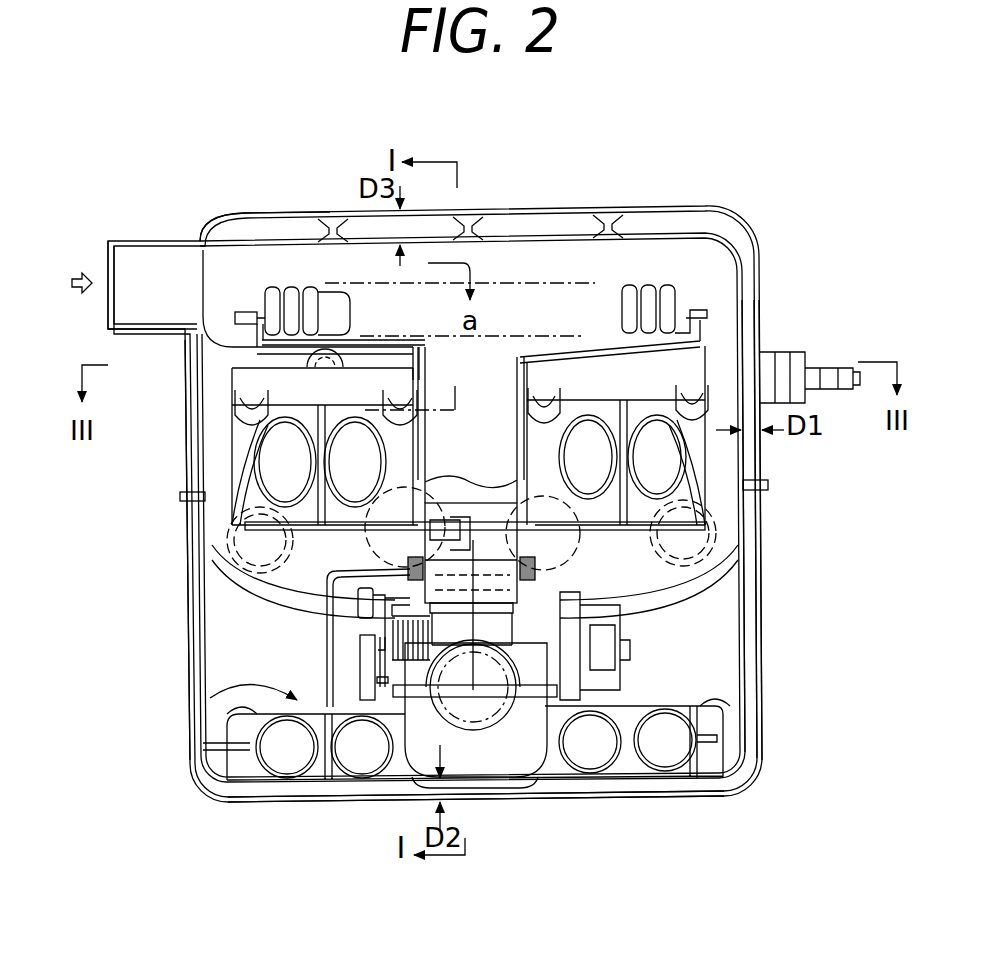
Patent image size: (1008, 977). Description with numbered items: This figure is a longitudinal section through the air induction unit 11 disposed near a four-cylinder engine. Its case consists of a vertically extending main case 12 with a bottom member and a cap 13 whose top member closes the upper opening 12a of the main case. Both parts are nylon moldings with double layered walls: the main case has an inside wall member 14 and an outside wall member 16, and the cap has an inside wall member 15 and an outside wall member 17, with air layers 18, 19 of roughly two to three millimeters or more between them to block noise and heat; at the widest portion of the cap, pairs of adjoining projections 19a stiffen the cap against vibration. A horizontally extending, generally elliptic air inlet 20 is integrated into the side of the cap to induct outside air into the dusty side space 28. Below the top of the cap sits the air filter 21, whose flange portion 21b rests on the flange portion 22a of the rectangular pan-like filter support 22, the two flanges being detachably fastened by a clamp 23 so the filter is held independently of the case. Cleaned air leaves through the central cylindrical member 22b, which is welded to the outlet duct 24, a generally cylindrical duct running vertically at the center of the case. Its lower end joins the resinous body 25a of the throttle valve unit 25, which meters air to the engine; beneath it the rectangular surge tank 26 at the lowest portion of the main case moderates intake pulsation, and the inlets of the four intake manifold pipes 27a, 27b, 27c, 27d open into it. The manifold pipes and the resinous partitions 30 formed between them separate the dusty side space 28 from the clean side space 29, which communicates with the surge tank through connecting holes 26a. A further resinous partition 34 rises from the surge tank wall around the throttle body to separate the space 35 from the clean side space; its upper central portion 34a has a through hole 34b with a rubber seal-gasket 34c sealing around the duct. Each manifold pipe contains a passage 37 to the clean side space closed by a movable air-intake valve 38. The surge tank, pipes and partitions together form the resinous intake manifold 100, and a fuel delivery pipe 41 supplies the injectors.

The air induction unit 11 is at (178, 467).
The main case 12 is at (769, 530).
The upper opening 12a is at (767, 488).
The cap 13 is at (764, 256).
The inside wall member 14 is at (752, 660).
The inside wall member 15 is at (758, 263).
The outside wall member 16 is at (748, 640).
The outside wall member 17 is at (759, 281).
The air layer 18 is at (703, 783).
The air layer 19 is at (697, 220).
The projections 19a is at (608, 220).
The air inlet 20 is at (215, 238).
The air filter 21 is at (673, 287).
The flange portion 21b is at (253, 318).
The filter support 22 is at (207, 320).
The flange portion 22a is at (240, 318).
The cylindrical member 22b is at (365, 385).
The clamp 23 is at (246, 312).
The outlet duct 24 is at (515, 470).
The throttle valve unit 25 is at (490, 700).
The resinous body 25a is at (412, 788).
The surge tank 26 is at (247, 765).
The connecting holes 26a is at (250, 700).
The intake manifold pipe 27a is at (272, 450).
The intake manifold pipe 27b is at (350, 445).
The intake manifold pipe 27c is at (582, 440).
The intake manifold pipe 27d is at (652, 440).
The dusty side space 28 is at (230, 357).
The clean side space 29 is at (697, 643).
The partitions 30 is at (385, 465).
The partition 34 is at (400, 640).
The upper central portion 34a is at (393, 617).
The through hole 34b is at (377, 603).
The rubber seal-gasket 34c is at (350, 636).
The space 35 is at (430, 645).
The passage 37 is at (250, 535).
The movable air-intake valve 38 is at (225, 555).
The fuel delivery pipe 41 is at (728, 372).
The intake manifold 100 is at (240, 708).